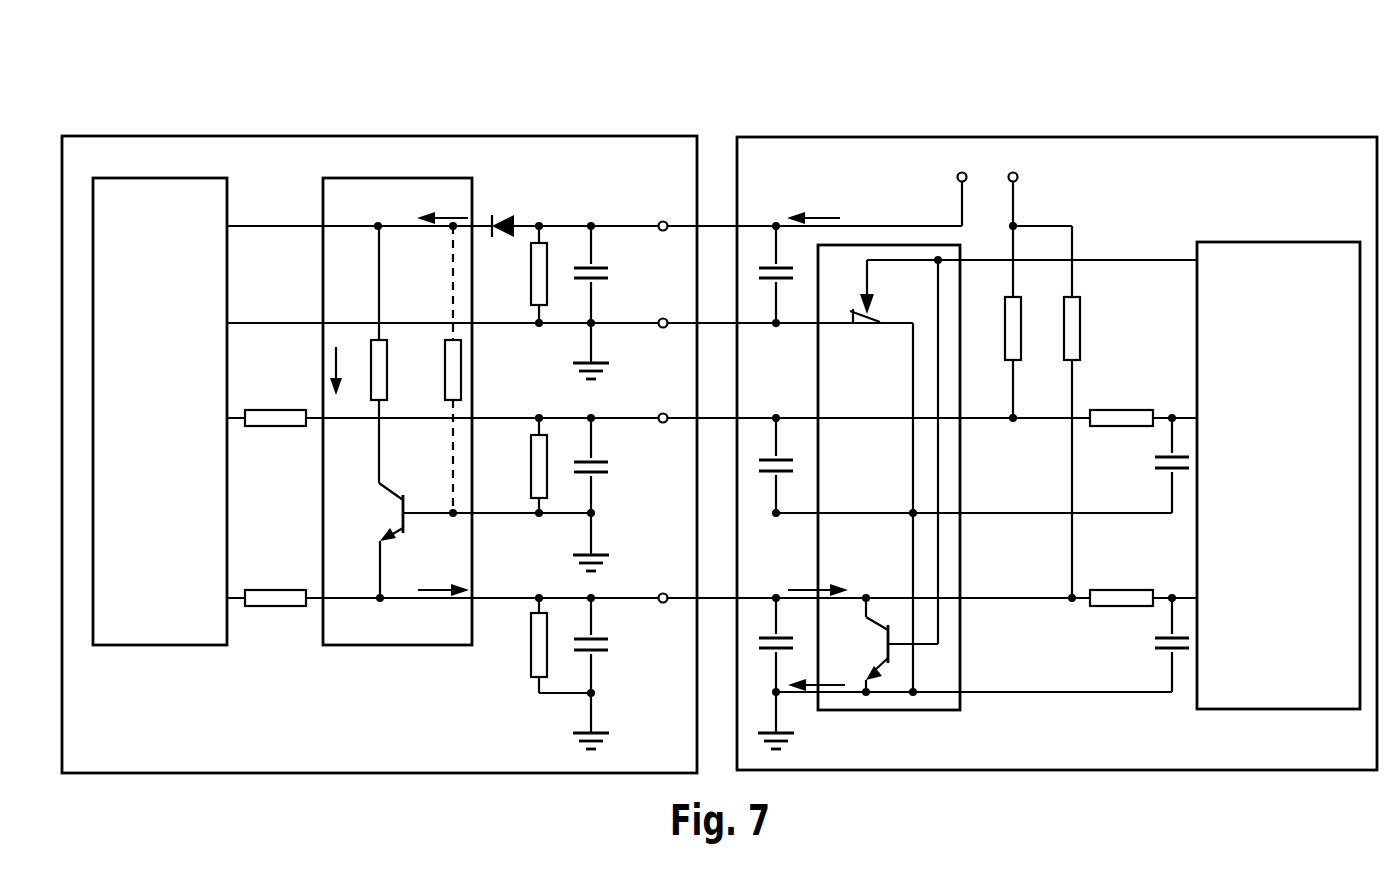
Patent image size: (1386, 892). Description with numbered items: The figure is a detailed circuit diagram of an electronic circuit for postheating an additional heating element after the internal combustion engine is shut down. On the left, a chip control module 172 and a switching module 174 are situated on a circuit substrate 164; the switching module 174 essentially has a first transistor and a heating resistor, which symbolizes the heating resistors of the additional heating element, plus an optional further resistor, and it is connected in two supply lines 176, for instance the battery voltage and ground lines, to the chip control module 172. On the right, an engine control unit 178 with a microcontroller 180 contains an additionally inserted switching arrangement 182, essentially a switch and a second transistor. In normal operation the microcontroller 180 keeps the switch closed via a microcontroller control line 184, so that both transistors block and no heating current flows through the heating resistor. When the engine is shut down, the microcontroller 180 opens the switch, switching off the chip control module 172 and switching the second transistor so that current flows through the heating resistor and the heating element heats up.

The circuit substrate 164 is at (313, 160).
The chip control module 172 is at (167, 210).
The switching module 174 is at (390, 210).
The supply lines 176 is at (715, 180).
The engine control unit 178 is at (1065, 160).
The microcontroller 180 is at (1272, 272).
The switching arrangement 182 is at (858, 268).
The microcontroller control line 184 is at (1135, 253).